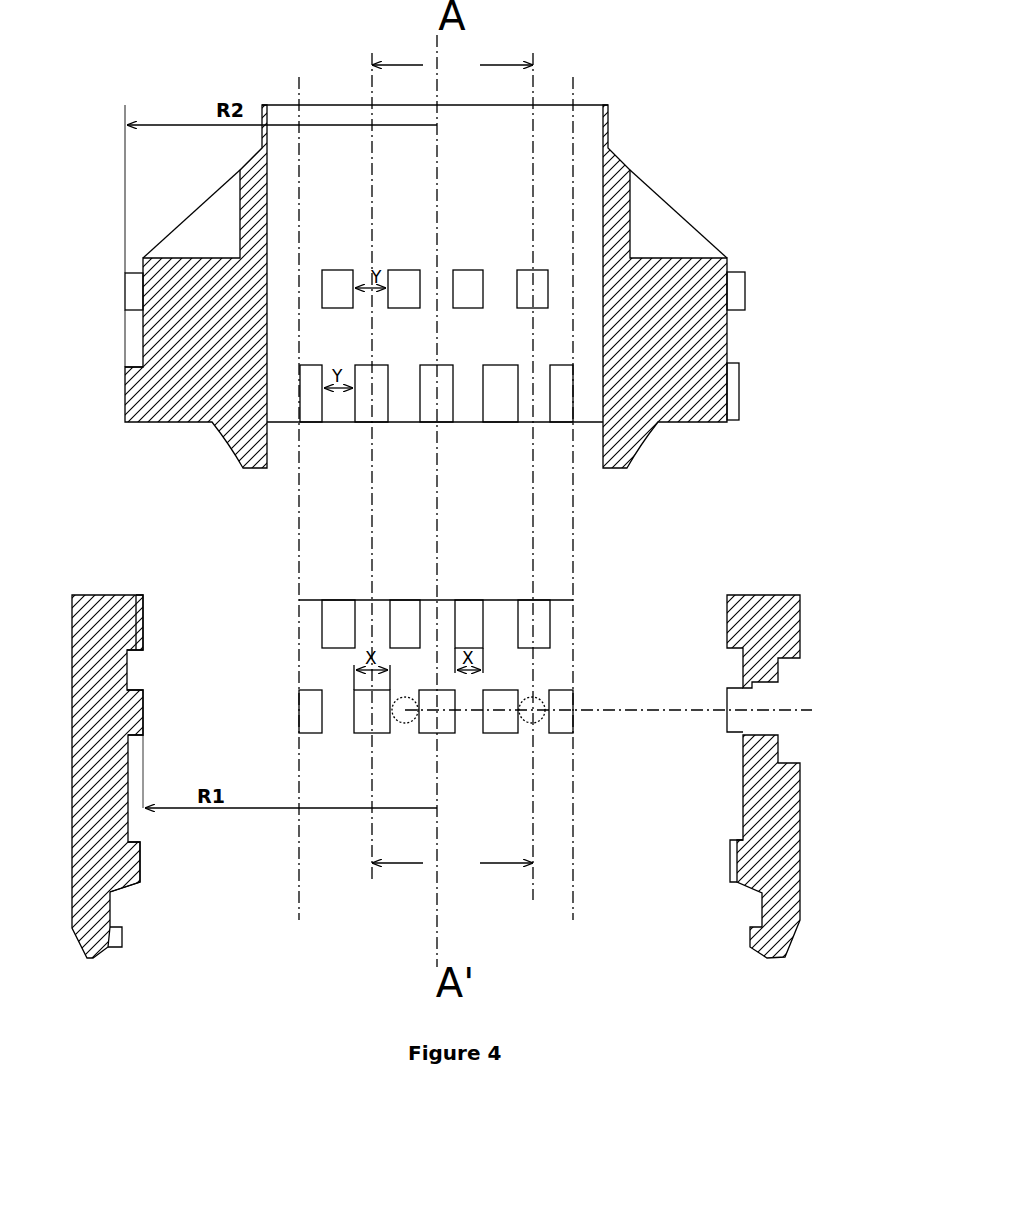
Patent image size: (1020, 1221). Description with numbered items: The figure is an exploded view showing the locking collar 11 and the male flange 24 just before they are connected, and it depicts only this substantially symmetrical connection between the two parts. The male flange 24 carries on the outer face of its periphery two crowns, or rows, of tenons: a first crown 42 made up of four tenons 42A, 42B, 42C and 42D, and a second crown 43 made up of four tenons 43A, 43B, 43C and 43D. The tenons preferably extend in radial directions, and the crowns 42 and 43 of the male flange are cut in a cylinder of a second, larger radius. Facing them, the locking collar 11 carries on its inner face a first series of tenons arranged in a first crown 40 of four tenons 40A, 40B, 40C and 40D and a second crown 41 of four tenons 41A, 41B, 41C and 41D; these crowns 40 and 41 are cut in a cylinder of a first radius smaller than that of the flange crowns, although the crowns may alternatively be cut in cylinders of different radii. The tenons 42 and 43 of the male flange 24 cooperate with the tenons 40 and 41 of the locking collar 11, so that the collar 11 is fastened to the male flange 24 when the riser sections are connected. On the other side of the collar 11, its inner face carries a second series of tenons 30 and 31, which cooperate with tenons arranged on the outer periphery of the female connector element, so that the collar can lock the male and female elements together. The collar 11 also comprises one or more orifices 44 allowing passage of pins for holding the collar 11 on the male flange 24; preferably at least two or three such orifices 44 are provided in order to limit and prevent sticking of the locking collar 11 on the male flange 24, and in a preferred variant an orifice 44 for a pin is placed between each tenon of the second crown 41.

The locking collar 11 is at (800, 847).
The male flange 24 is at (668, 415).
The tenons of the second series 30 is at (113, 940).
The tenons of the second series 31 is at (137, 867).
The first crown of tenons 40 is at (150, 628).
The tenon 40A is at (340, 607).
The tenon 40B is at (410, 610).
The tenon 40C is at (468, 610).
The tenon 40D is at (538, 607).
The second crown of tenons 41 is at (152, 717).
The tenon 41A is at (310, 727).
The tenon 41B is at (362, 730).
The tenon 41C is at (447, 727).
The tenon 41D is at (502, 727).
The first crown of tenons 42 is at (106, 292).
The tenon 42A is at (340, 278).
The tenon 42B is at (410, 278).
The tenon 42C is at (470, 278).
The tenon 42D is at (538, 278).
The second crown of tenons 43 is at (116, 403).
The tenon 43A is at (310, 397).
The tenon 43B is at (365, 397).
The tenon 43C is at (432, 397).
The tenon 43D is at (503, 397).
The orifice 44 is at (407, 722).